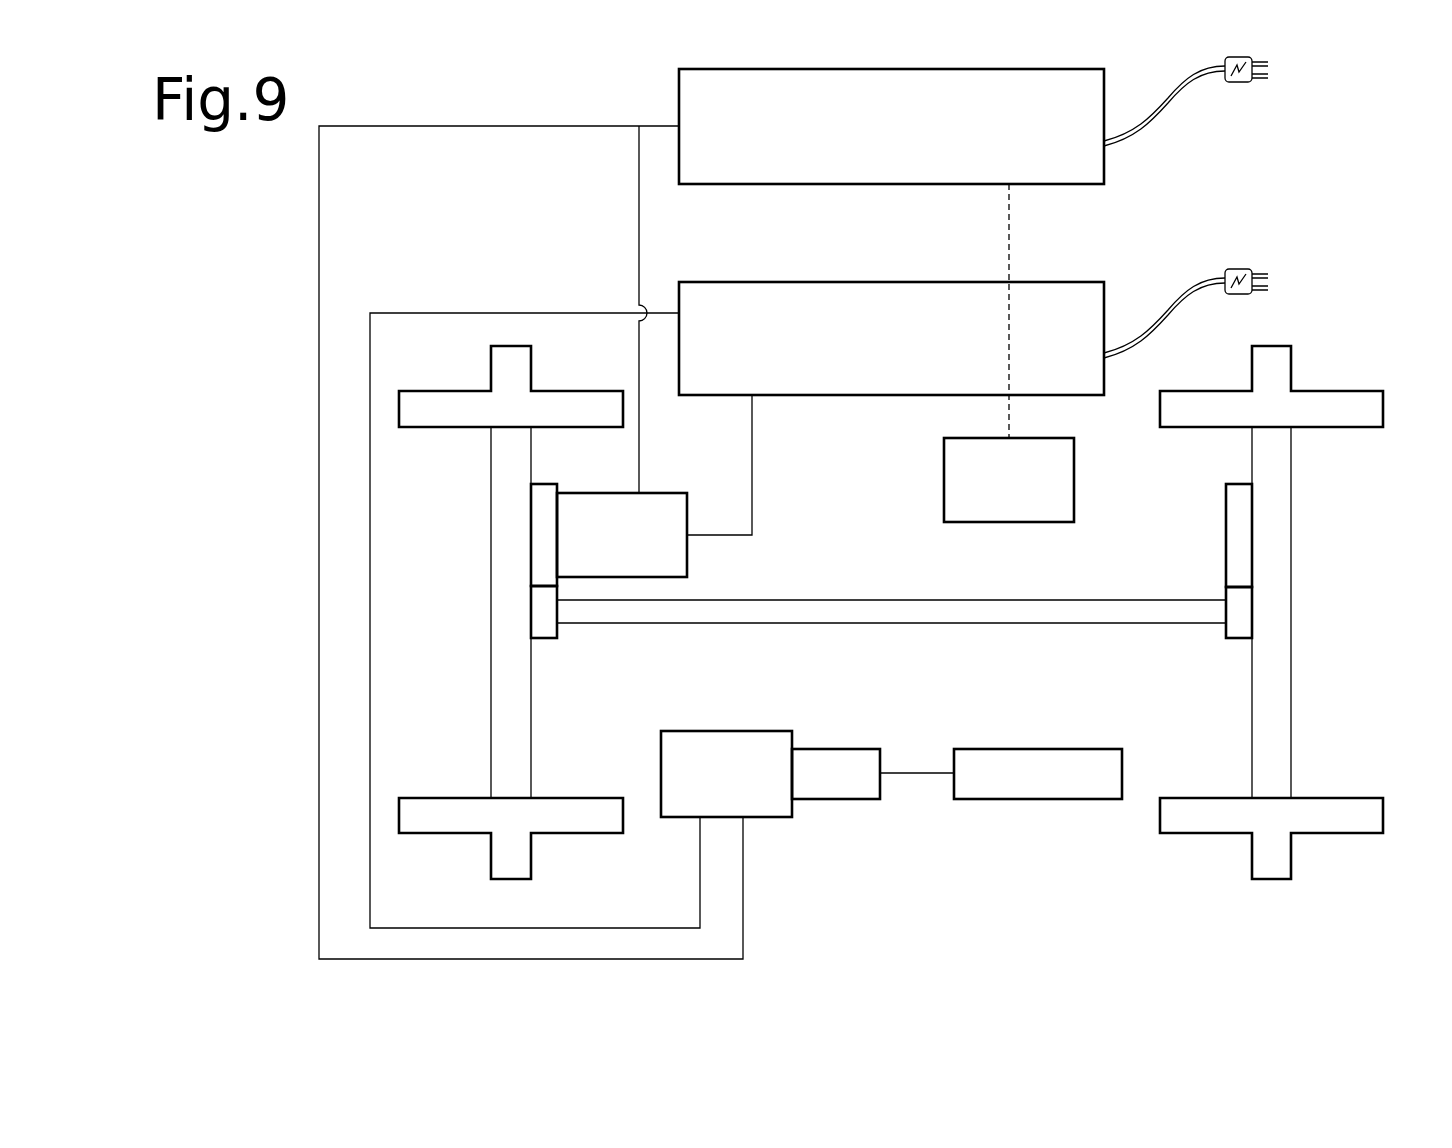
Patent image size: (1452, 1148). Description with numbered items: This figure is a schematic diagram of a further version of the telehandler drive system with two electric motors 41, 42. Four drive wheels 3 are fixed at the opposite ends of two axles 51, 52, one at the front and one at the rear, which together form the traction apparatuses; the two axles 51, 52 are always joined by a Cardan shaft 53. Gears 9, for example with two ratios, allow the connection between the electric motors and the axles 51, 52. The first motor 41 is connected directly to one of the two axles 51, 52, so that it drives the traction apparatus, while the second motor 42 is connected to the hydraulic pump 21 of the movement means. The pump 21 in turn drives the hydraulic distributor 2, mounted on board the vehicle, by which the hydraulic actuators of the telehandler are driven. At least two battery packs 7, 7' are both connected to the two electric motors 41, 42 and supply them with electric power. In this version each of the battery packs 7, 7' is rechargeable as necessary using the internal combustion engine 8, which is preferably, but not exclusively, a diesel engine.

The battery pack 7' is at (940, 112).
The battery pack 7 is at (973, 311).
The drive wheel 3 is at (447, 390).
The gear 9 is at (542, 505).
The axle 51 is at (492, 557).
The axle 52 is at (1289, 557).
The Cardan shaft 53 is at (807, 600).
The first motor 41 is at (658, 492).
The second motor 42 is at (712, 730).
The hydraulic pump 21 is at (840, 748).
The hydraulic distributor 2 is at (1025, 748).
The internal combustion engine 8 is at (1055, 483).